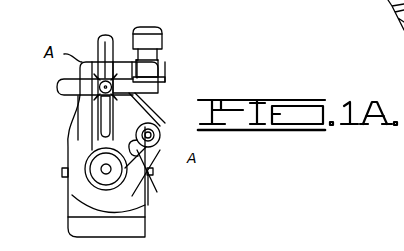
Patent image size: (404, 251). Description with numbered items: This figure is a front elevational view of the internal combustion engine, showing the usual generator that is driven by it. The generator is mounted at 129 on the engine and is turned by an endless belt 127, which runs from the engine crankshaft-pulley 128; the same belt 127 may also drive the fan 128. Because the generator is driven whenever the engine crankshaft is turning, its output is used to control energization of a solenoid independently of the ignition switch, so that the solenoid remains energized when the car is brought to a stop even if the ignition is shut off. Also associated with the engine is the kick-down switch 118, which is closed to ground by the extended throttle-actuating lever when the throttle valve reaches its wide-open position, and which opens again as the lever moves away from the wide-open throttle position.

The kick-down switch 118 is at (165, 63).
The endless belt 127 is at (88, 134).
The engine crankshaft-pulley 128 is at (107, 34).
The generator mounting 129 is at (150, 176).